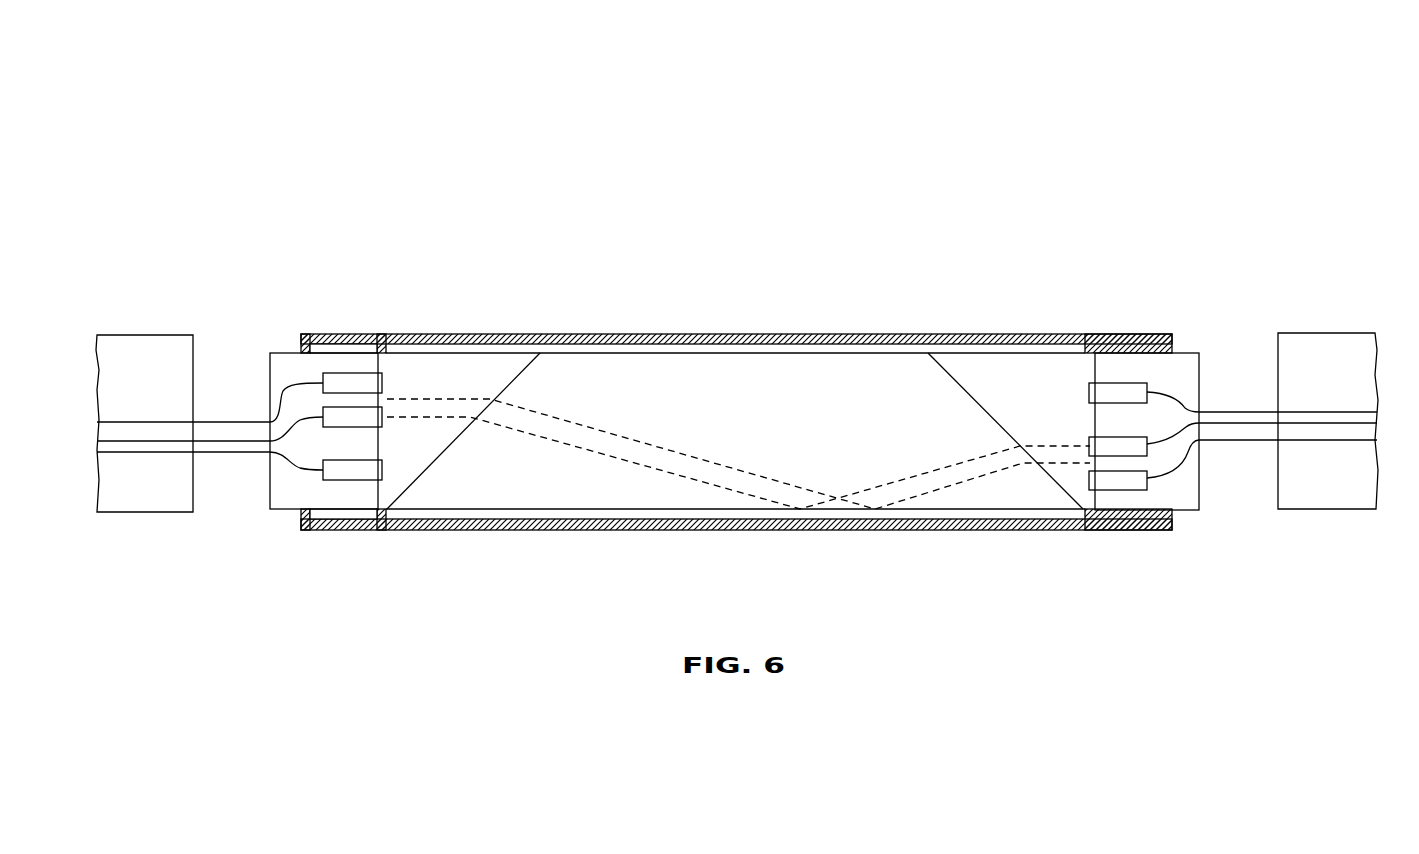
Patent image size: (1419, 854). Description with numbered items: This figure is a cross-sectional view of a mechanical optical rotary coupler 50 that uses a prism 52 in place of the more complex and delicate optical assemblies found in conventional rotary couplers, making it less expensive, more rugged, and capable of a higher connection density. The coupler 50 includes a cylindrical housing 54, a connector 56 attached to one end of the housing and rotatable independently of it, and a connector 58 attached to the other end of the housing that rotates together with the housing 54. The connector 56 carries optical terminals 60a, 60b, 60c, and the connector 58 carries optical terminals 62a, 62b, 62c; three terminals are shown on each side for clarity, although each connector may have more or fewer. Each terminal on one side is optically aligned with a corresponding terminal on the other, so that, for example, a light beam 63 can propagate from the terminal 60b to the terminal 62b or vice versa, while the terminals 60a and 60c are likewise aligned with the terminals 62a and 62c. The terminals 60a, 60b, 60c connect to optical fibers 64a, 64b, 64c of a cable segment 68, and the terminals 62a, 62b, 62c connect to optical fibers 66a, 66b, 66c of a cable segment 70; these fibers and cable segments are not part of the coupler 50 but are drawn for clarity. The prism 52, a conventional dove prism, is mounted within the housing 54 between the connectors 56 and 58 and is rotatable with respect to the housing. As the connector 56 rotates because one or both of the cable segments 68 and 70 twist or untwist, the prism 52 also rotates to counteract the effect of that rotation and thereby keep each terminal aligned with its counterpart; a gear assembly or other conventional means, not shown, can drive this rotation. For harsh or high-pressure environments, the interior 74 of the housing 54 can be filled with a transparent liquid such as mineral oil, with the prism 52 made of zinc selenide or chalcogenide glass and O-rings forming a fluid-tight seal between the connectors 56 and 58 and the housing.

The mechanical optical rotary coupler 50 is at (847, 140).
The prism 52 is at (997, 418).
The cylindrical housing 54 is at (365, 335).
The connector 56 is at (278, 353).
The connector 58 is at (1192, 350).
The optical terminal 60a is at (348, 373).
The optical terminal 60b is at (368, 427).
The optical terminal 60c is at (348, 480).
The optical terminal 62a is at (1118, 493).
The optical terminal 62b is at (1113, 437).
The optical terminal 62c is at (1118, 383).
The light beam 63 is at (417, 398).
The optical fiber 64a is at (205, 422).
The optical fiber 64b is at (217, 441).
The optical fiber 64c is at (237, 452).
The optical fiber 66a is at (1248, 440).
The optical fiber 66b is at (1242, 423).
The optical fiber 66c is at (1222, 408).
The cable segment 68 is at (157, 335).
The cable segment 70 is at (1348, 333).
The interior 74 is at (1055, 373).